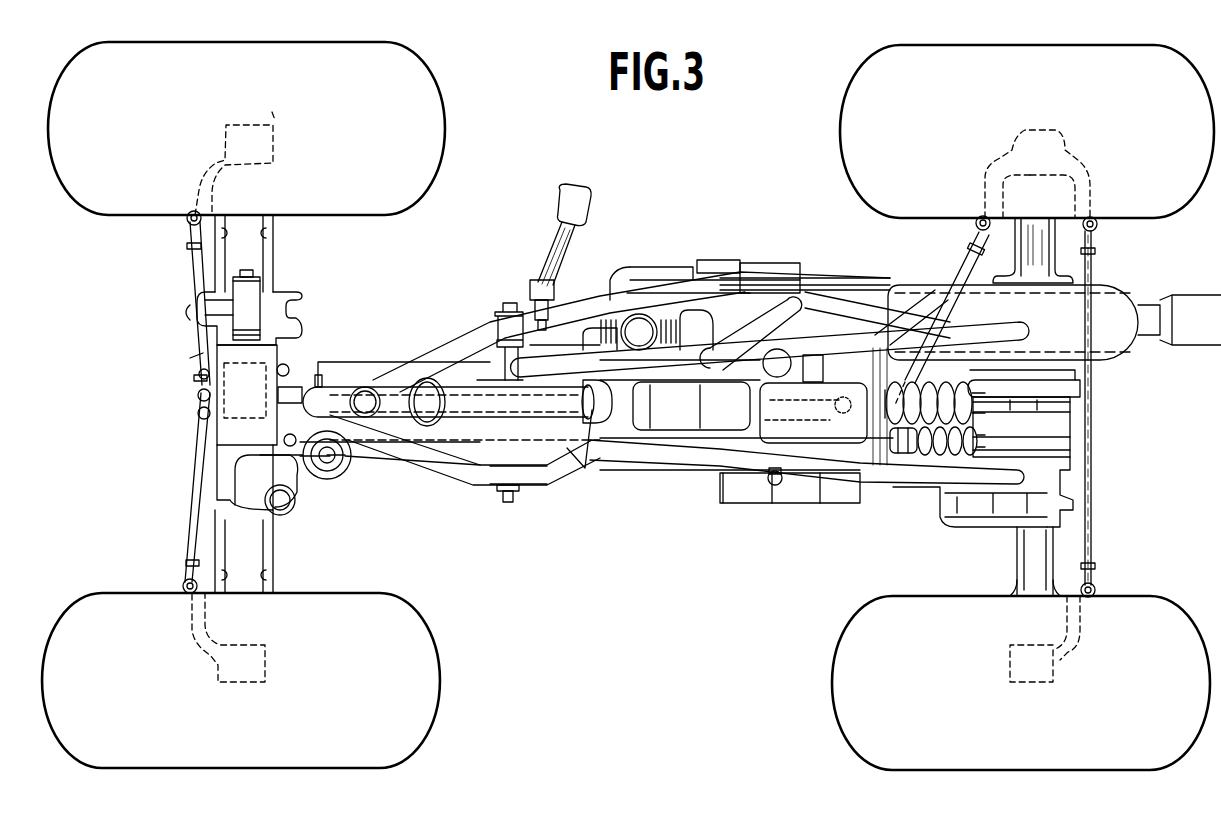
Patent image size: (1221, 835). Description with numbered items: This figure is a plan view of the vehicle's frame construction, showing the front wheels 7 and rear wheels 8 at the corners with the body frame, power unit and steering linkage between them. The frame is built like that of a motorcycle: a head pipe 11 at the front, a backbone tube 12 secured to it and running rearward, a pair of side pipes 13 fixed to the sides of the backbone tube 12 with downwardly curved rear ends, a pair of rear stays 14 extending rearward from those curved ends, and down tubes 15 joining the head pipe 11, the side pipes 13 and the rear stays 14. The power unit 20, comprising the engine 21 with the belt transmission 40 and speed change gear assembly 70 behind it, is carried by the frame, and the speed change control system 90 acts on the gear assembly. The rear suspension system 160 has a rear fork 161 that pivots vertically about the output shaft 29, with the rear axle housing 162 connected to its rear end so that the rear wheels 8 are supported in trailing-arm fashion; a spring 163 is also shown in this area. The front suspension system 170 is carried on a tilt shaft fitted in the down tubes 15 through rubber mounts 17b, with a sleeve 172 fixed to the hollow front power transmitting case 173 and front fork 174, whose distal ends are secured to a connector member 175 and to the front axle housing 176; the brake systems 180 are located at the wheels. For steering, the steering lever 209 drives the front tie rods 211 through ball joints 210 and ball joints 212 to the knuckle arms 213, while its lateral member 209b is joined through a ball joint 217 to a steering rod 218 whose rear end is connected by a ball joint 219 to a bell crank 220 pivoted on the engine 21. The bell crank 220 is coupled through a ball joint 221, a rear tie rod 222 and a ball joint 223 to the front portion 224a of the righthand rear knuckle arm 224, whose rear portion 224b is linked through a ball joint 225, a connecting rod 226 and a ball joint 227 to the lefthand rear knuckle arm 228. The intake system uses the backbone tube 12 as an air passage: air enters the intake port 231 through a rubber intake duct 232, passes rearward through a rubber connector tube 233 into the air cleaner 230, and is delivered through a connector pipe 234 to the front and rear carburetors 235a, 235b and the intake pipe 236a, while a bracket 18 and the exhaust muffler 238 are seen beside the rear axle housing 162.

The front wheels 7 is at (406, 48).
The rear wheels 8 is at (852, 100).
The head pipe 11 is at (333, 392).
The backbone tube 12 is at (468, 390).
The side pipes 13 is at (673, 456).
The rear stays 14 is at (774, 345).
The down tubes 15 is at (567, 322).
The rubber mounts 17b is at (504, 500).
The bracket 18 is at (878, 455).
The power unit 20 is at (700, 520).
The engine 21 is at (645, 462).
The output shaft 29 is at (780, 488).
The belt transmission 40 is at (756, 510).
The speed change gear assembly 70 is at (1042, 406).
The speed change control system 90 is at (1039, 431).
The suspension system 160 is at (814, 232).
The rear fork 161 is at (858, 286).
The rear axle housing 162 is at (1020, 558).
The rear spring 163 is at (937, 385).
The suspension system 170 is at (389, 316).
The sleeve 172 is at (442, 375).
The front power transmitting case 173 is at (362, 462).
The front fork 174 is at (356, 370).
The connector member 175 is at (330, 383).
The front axle housing 176 is at (222, 278).
The brake systems 180 is at (184, 315).
The steering lever 209 is at (234, 385).
The lateral member 209b is at (198, 414).
The ball joints 210 is at (198, 393).
The front tie rods 211 is at (196, 461).
The ball joints 212 is at (190, 223).
The knuckle arms 213 is at (204, 182).
The ball joint 217 is at (294, 478).
The steering rod 218 is at (466, 460).
The ball joint 219 is at (840, 462).
The bell crank 220 is at (813, 399).
The ball joint 221 is at (900, 445).
The rear tie rod 222 is at (966, 262).
The ball joint 223 is at (975, 226).
The righthand rear knuckle arm 224 is at (1072, 152).
The front portion 224a is at (1000, 188).
The rear portion 224b is at (1088, 188).
The ball joint 225 is at (1097, 228).
The connecting rod 226 is at (1093, 498).
The ball joint 227 is at (1096, 589).
The lefthand rear knuckle arm 228 is at (1062, 658).
The air cleaner 230 is at (624, 430).
The intake port 231 is at (375, 392).
The rubber intake duct 232 is at (418, 420).
The rubber connector tube 233 is at (588, 440).
The connector pipe 234 is at (696, 320).
The front carburetor 235a is at (638, 322).
The rear carburetor 235b is at (742, 345).
The intake pipe 236a is at (590, 326).
The exhaust muffler 238 is at (1130, 342).